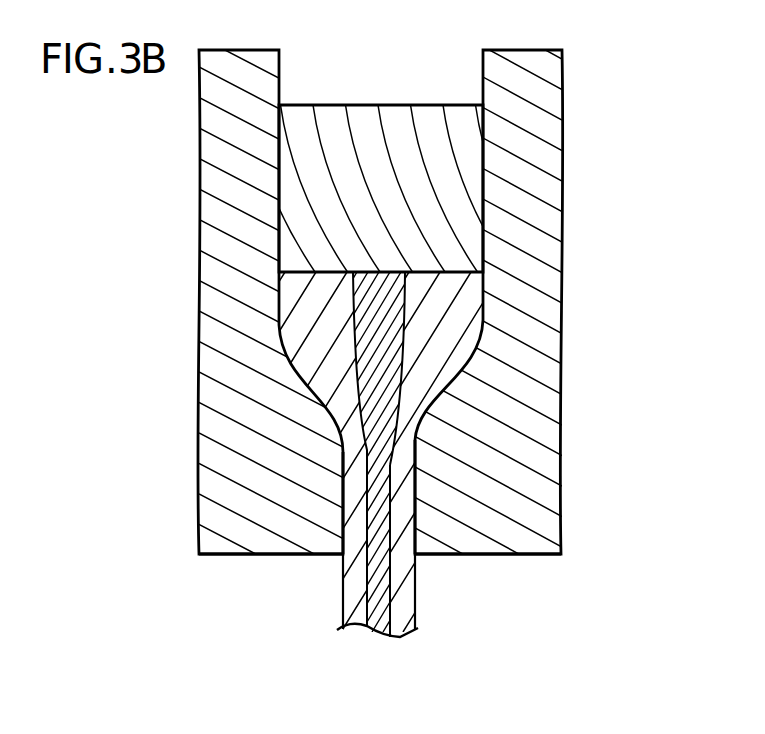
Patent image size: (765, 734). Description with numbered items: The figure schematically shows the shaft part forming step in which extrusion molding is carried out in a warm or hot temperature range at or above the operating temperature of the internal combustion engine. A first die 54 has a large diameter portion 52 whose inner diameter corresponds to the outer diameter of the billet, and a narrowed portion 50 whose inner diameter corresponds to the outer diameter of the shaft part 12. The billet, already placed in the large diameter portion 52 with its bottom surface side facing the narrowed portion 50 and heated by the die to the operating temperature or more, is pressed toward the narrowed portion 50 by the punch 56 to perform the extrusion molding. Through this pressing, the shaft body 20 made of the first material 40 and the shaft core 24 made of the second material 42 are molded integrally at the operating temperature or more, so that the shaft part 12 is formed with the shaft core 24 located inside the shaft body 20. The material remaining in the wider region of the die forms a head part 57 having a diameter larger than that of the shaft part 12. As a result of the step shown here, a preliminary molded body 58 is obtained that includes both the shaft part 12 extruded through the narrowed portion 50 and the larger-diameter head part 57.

The shaft part 12 is at (153, 566).
The shaft body 20 is at (355, 603).
The shaft core 24 is at (380, 583).
The first material 40 is at (458, 305).
The second material 42 is at (390, 337).
The narrowed portion 50 is at (347, 495).
The large diameter portion 52 is at (483, 66).
The first die 54 is at (552, 164).
The punch 56 is at (398, 113).
The head part 57 is at (313, 351).
The preliminary molded body 58 is at (116, 375).